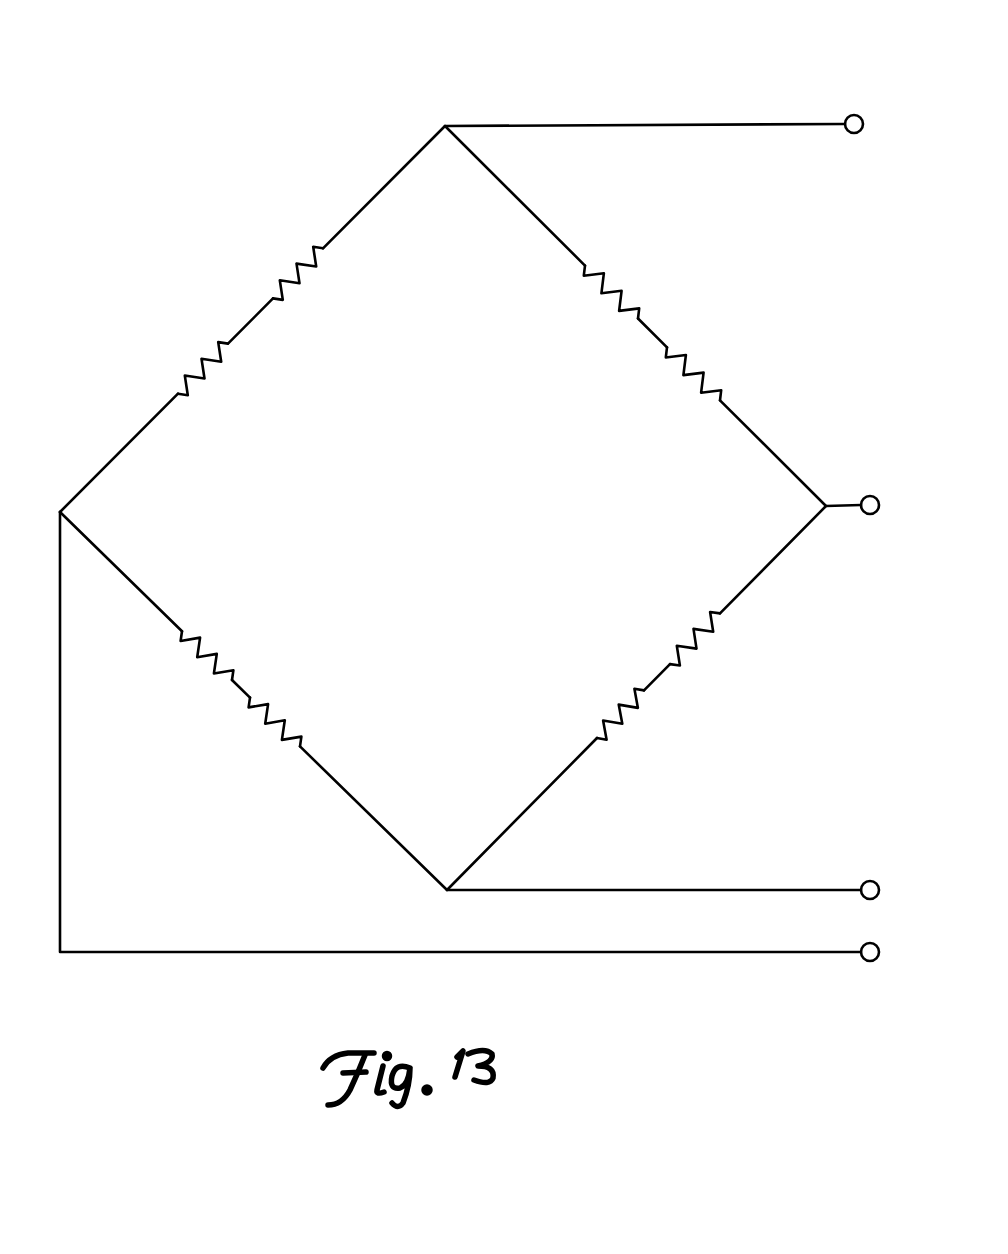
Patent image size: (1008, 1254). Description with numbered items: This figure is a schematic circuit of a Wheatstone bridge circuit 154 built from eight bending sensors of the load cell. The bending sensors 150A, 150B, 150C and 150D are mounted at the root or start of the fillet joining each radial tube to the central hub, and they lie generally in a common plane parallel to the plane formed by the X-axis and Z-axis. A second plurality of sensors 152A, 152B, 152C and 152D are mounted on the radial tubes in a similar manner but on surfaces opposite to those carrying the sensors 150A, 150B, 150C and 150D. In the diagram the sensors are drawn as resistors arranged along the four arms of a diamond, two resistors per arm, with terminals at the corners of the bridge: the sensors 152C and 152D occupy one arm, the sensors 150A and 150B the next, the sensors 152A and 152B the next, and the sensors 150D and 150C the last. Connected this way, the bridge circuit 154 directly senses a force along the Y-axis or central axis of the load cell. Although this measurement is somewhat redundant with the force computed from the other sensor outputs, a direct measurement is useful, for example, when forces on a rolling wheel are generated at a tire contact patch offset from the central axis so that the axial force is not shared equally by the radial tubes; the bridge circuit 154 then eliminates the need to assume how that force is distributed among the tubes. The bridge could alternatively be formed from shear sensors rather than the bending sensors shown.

The Wheatstone bridge circuit 154 is at (289, 106).
The bending sensor 150A is at (607, 272).
The bending sensor 150B is at (690, 350).
The bending sensor 150C is at (262, 751).
The bending sensor 150D is at (222, 687).
The bending sensor 152A is at (710, 638).
The bending sensor 152B is at (633, 719).
The bending sensor 152C is at (197, 357).
The bending sensor 152D is at (290, 263).